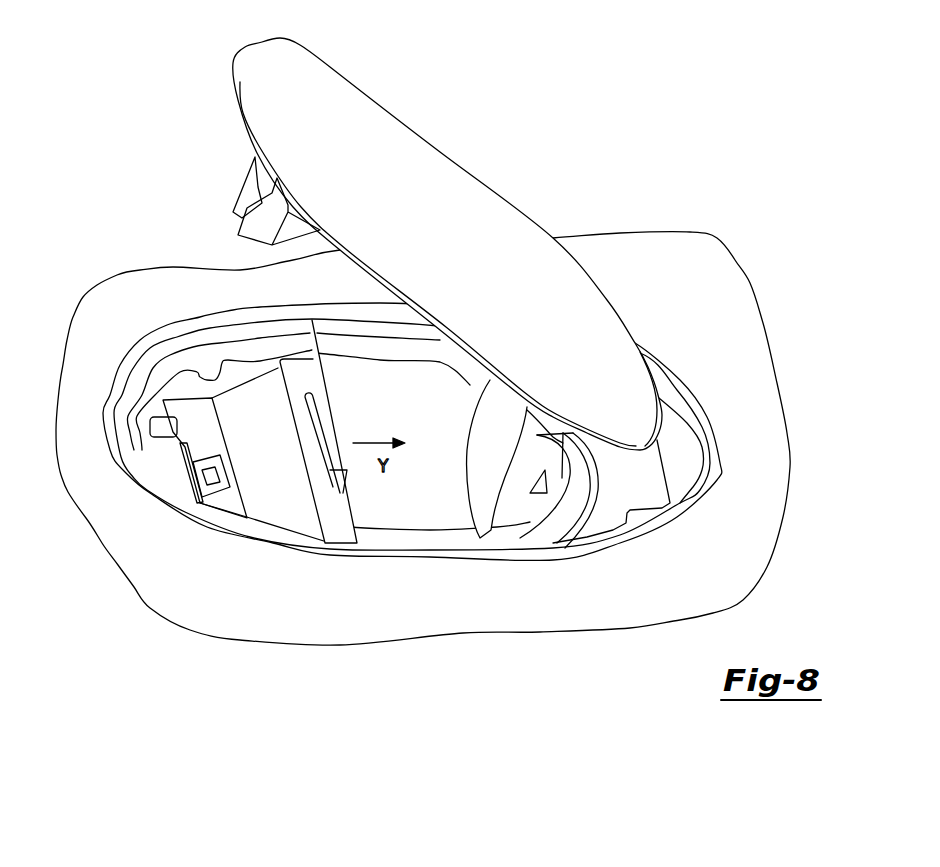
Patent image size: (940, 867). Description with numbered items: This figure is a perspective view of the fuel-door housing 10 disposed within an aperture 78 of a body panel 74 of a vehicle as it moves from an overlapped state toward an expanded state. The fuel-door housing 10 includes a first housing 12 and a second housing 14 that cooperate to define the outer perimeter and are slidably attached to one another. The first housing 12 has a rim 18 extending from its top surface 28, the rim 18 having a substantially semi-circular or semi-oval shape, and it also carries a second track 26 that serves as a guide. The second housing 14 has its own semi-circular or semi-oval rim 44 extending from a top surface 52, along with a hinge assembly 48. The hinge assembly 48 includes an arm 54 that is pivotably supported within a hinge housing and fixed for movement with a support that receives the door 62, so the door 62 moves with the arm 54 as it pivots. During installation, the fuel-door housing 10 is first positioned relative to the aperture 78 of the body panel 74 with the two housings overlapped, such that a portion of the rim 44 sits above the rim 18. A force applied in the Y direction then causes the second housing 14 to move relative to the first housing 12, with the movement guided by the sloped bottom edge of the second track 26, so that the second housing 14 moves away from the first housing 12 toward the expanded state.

The fuel-door housing 10 is at (460, 640).
The first housing 12 is at (298, 507).
The second housing 14 is at (511, 528).
The rim 18 is at (208, 342).
The second track 26 is at (317, 407).
The top surface 28 is at (287, 338).
The rim 44 is at (327, 330).
The hinge assembly 48 is at (802, 485).
The top surface 52 is at (443, 362).
The arm 54 is at (583, 522).
The door 62 is at (360, 127).
The body panel 74 is at (697, 262).
The aperture 78 is at (697, 427).